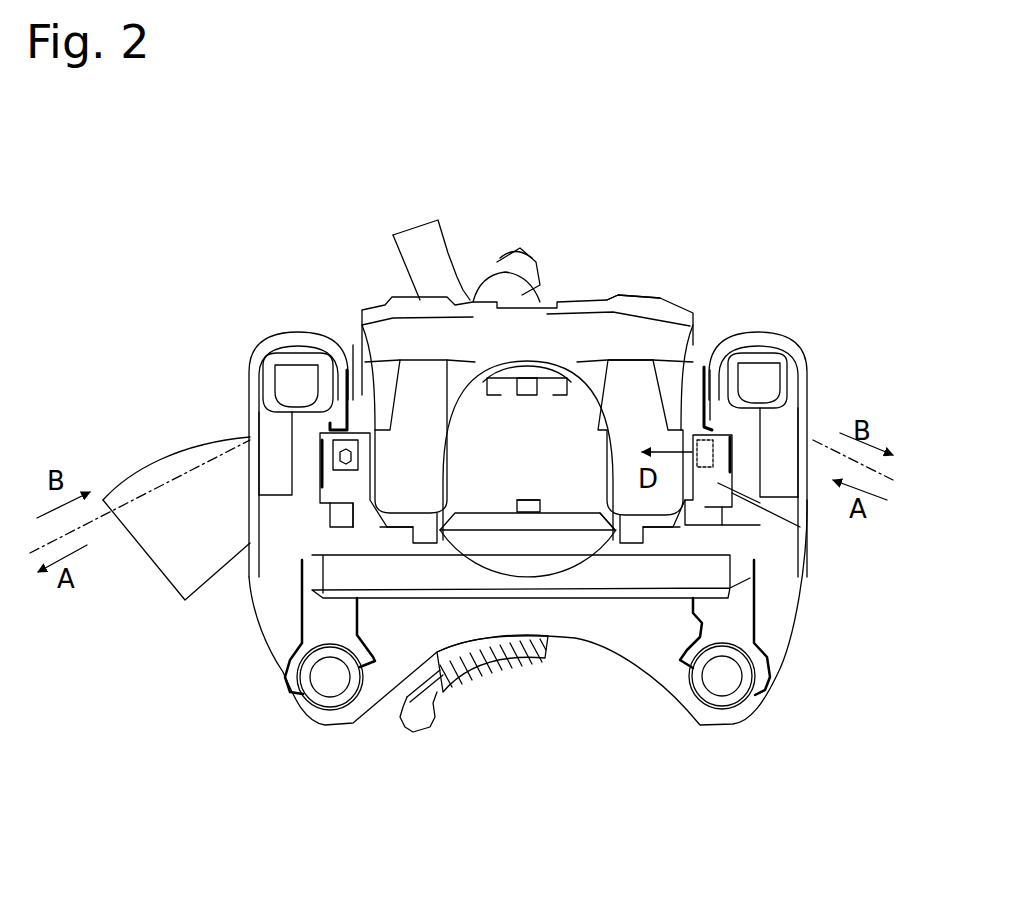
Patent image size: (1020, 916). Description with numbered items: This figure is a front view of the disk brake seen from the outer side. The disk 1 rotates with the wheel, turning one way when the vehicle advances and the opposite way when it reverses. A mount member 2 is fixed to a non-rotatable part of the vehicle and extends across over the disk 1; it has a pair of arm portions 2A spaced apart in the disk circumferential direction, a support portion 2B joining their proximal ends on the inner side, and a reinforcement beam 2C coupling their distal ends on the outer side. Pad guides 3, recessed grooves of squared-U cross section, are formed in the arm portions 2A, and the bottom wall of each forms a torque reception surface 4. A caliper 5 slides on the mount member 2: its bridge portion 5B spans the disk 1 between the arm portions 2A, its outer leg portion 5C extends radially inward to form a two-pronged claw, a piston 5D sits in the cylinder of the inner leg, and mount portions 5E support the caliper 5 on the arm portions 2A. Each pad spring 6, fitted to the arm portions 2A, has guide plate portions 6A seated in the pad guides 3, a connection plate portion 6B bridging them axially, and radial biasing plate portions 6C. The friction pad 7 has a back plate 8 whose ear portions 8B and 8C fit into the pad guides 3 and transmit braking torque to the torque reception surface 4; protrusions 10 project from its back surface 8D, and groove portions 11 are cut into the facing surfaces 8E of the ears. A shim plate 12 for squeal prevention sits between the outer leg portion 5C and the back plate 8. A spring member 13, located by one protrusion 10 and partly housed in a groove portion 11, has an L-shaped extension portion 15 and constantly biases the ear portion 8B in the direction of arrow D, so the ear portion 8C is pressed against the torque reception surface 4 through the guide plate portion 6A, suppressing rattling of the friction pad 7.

The disk 1 is at (140, 487).
The mount member 2 is at (780, 677).
The arm portions 2A is at (293, 368).
The support portion 2B is at (403, 658).
The reinforcement beam 2C is at (538, 600).
The pad guides 3 is at (305, 405).
The torque reception surface 4 is at (335, 505).
The caliper 5 is at (638, 297).
The bridge portion 5B is at (392, 308).
The outer leg portion 5C is at (580, 352).
The piston 5D is at (553, 545).
The mount portions 5E is at (333, 343).
The pad spring 6 is at (342, 375).
The guide plate portions 6A is at (320, 455).
The connection plate portion 6B is at (350, 397).
The radial biasing plate portions 6C is at (345, 530).
The friction pad 7 is at (606, 540).
The back plate 8 is at (478, 390).
The ear portion 8B is at (760, 503).
The ear portion 8C is at (305, 515).
The back surface 8D is at (468, 600).
The facing surface 8E is at (318, 498).
The protrusions 10 is at (300, 440).
The groove portions 11 is at (320, 470).
The shim plate 12 is at (503, 545).
The spring member 13 is at (698, 483).
The extension portion 15 is at (700, 437).